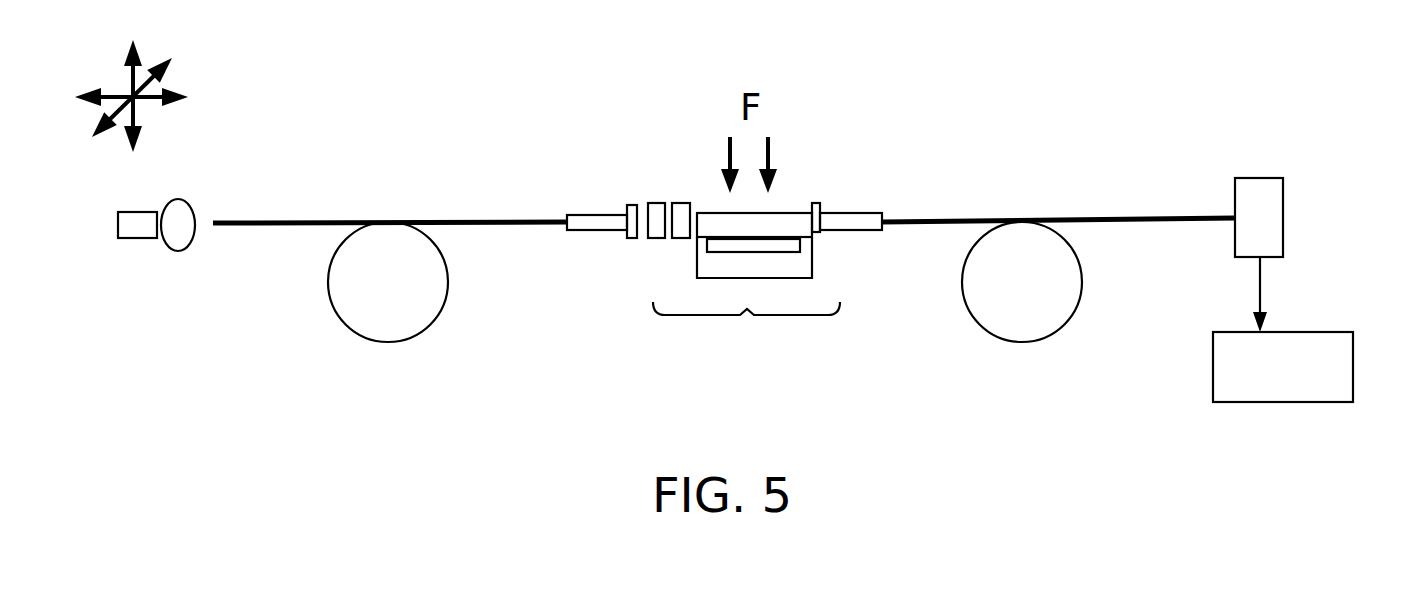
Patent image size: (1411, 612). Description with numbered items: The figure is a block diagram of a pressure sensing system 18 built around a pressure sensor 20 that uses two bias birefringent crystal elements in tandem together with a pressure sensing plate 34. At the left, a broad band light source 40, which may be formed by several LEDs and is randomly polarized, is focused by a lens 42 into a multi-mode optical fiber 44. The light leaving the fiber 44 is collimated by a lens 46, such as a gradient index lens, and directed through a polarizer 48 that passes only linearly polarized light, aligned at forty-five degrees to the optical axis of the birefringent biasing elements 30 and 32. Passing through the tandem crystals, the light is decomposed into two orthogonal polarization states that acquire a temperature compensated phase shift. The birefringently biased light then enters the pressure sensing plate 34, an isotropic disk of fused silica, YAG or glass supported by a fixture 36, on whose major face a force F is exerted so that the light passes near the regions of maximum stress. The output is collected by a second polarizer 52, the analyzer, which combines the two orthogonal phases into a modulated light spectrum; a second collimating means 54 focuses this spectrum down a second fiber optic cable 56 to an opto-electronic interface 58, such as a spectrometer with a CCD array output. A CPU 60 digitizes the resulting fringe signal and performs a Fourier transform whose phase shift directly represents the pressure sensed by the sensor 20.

The pressure sensing system 18 is at (580, 413).
The pressure sensor 20 is at (746, 332).
The birefringent biasing element 30 is at (657, 203).
The birefringent biasing element 32 is at (682, 203).
The pressure sensing plate 34 is at (788, 213).
The fixture 36 is at (807, 260).
The broad band light source 40 is at (137, 230).
The lens 42 is at (183, 210).
The multi-mode optical fiber 44 is at (382, 237).
The lens 46 is at (582, 218).
The polarizer 48 is at (633, 237).
The second polarizer 52 is at (820, 203).
The second collimating means 54 is at (877, 212).
The second fiber optic cable 56 is at (1022, 232).
The opto-electronic interface 58 is at (1273, 183).
The CPU 60 is at (1312, 330).